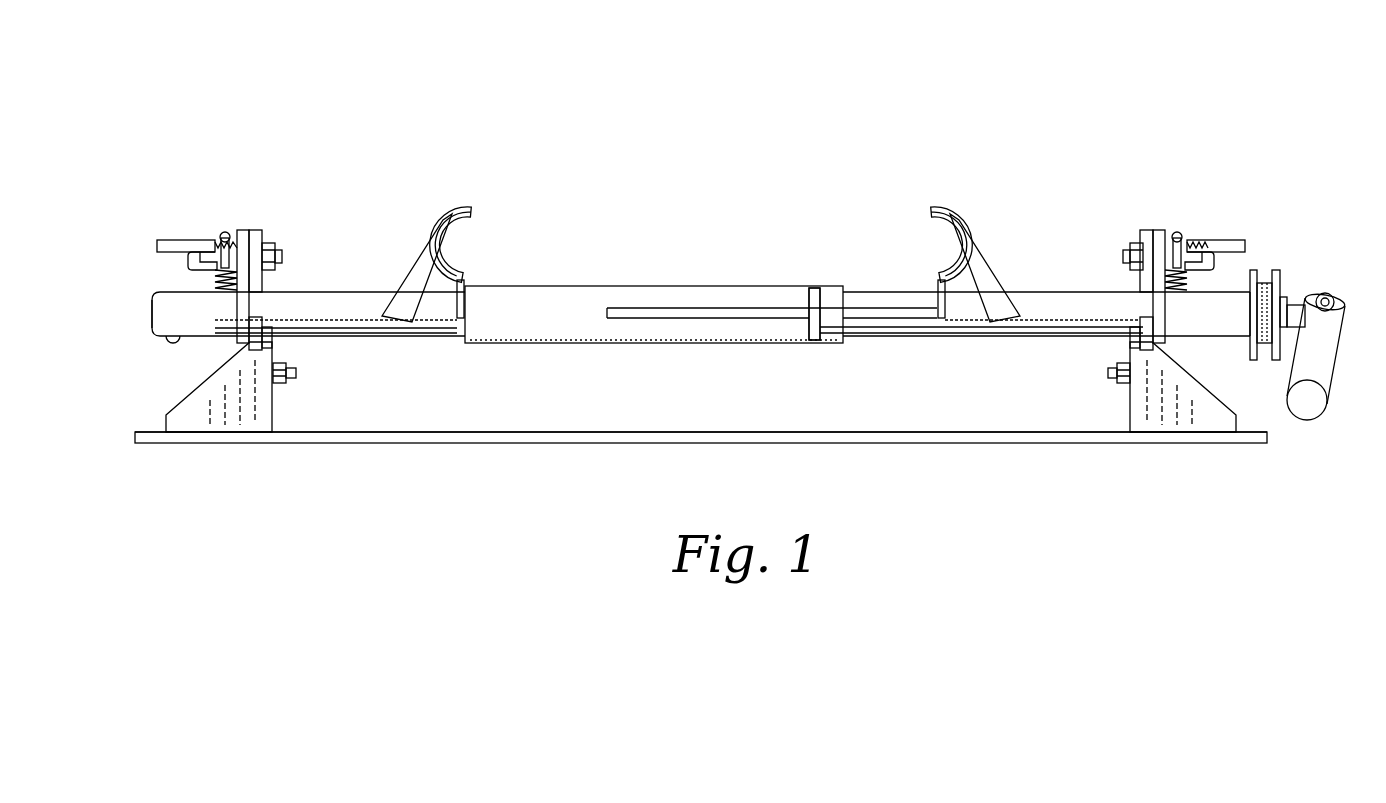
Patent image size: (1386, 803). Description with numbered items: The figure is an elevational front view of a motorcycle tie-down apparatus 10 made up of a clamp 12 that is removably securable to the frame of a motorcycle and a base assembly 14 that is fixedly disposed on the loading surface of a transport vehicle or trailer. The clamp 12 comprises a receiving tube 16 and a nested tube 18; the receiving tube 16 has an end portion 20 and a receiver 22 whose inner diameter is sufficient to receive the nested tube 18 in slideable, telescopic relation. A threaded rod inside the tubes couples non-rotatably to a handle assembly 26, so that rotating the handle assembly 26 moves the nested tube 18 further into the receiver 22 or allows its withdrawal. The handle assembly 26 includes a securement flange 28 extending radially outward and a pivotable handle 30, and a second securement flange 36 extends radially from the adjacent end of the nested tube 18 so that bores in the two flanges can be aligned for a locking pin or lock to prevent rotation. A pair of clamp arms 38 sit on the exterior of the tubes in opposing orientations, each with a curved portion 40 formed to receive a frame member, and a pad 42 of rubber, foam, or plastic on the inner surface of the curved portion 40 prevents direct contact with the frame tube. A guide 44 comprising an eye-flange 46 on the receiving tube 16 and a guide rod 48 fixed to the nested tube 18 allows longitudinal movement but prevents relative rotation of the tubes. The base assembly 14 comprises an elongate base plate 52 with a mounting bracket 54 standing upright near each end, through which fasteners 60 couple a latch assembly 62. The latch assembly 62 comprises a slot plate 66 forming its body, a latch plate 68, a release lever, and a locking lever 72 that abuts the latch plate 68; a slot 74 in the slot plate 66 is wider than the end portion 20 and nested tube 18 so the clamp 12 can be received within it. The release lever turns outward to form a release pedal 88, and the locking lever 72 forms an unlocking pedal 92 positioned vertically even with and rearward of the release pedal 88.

The motorcycle tie-down apparatus 10 is at (1050, 92).
The clamp 12 is at (128, 292).
The base assembly 14 is at (140, 400).
The receiving tube 16 is at (577, 286).
The nested tube 18 is at (1083, 292).
The end portion 20 is at (340, 322).
The receiver 22 is at (536, 326).
The handle assembly 26 is at (1344, 278).
The securement flange 28 is at (1276, 270).
The pivotable handle 30 is at (1336, 365).
The second securement flange 36 is at (1253, 270).
The clamp arm 38 is at (433, 233).
The curved portion 40 is at (466, 207).
The pad 42 is at (450, 240).
The guide 44 is at (790, 285).
The eye-flange 46 is at (822, 338).
The guide rod 48 is at (900, 323).
The base plate 52 is at (1057, 444).
The mounting bracket 54 is at (221, 425).
The fastener 60 is at (1108, 376).
The latch assembly 62 is at (290, 220).
The slot plate 66 is at (256, 229).
The latch plate 68 is at (238, 230).
The locking lever 72 is at (711, 261).
The slot 74 is at (283, 256).
The release pedal 88 is at (160, 238).
The unlocking pedal 92 is at (190, 248).